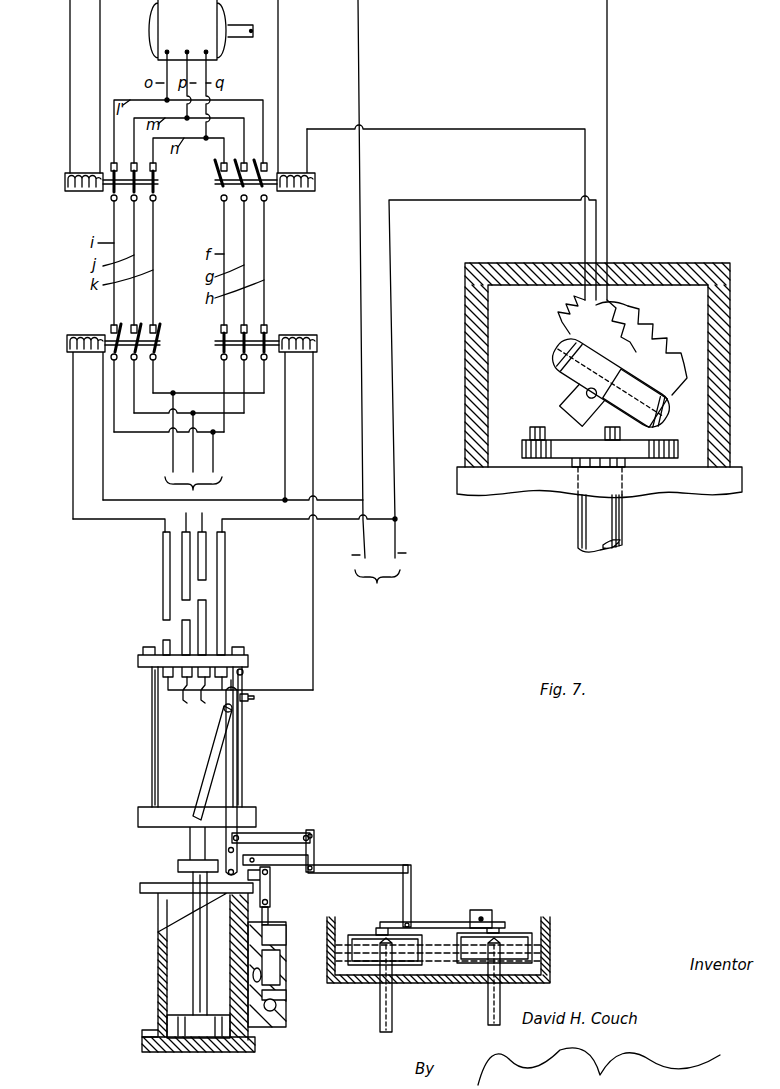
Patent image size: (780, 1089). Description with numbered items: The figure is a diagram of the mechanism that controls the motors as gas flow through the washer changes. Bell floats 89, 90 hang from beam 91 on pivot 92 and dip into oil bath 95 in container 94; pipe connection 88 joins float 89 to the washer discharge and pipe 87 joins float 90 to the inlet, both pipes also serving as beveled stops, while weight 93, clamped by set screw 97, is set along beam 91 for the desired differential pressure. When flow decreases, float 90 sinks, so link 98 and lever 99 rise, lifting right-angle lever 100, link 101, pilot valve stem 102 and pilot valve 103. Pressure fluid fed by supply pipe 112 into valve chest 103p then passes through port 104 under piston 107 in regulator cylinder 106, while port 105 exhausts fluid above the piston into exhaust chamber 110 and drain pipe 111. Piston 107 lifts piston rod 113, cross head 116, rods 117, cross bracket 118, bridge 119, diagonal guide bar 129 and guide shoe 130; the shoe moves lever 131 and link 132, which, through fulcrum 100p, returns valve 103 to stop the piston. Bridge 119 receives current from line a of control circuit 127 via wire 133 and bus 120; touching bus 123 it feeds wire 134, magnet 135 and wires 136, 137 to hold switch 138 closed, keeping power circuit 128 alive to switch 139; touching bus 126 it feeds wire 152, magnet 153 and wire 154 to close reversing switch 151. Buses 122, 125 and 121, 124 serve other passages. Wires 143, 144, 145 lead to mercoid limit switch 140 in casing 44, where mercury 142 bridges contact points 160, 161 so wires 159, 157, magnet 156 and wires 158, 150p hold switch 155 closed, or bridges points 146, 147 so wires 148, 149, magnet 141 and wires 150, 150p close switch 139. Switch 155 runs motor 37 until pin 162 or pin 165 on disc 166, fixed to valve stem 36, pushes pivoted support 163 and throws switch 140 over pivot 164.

The motor 37 is at (201, 30).
The wire 157 is at (70, 95).
The wire 158 is at (100, 70).
The wire 150 is at (278, 92).
The wire 150p is at (359, 92).
The switch 155 is at (160, 185).
The switch 139 is at (220, 195).
The magnet 156 is at (85, 193).
The control magnet 141 is at (305, 193).
The wire 149 is at (585, 240).
The wire 143 is at (497, 200).
The reversing switch 151 is at (162, 343).
The switch 138 is at (222, 360).
The magnet 153 is at (72, 335).
The magnet 135 is at (305, 335).
The wire 134 is at (313, 428).
The wire 136 is at (285, 420).
The power circuit 128 is at (193, 450).
The wire 154 is at (120, 496).
The wire 137 is at (320, 500).
The wire 152 is at (128, 521).
The wire 133 is at (268, 521).
The control circuit 127 is at (379, 566).
The bus 126 is at (163, 578).
The bus 125 is at (186, 558).
The bus 124 is at (202, 561).
The bus 120 is at (225, 590).
The bus 121 is at (203, 611).
The bus 122 is at (182, 628).
The bus 123 is at (163, 641).
The transverse electrical contactor or bridge 119 is at (216, 660).
The cross bracket 118 is at (140, 661).
The rods 117 is at (152, 773).
The cross head 116 is at (142, 826).
The lever 131 is at (237, 780).
The guide shoe 130 is at (224, 718).
The diagonal guide bar 129 is at (214, 762).
The link 132 is at (278, 833).
The lever 100 is at (316, 846).
The fulcrum 100p is at (314, 872).
The lever 99 is at (372, 863).
The link 98 is at (411, 876).
The link 101 is at (270, 890).
The pilot valve stem 102 is at (268, 913).
The piston rod 113 is at (193, 935).
The regulator cylinder 106 is at (158, 976).
The supply pipe 112 is at (258, 1022).
The piston 107 is at (170, 1022).
The pilot valve 103 is at (286, 950).
The port 105 is at (286, 934).
The exhaust chamber 110 is at (270, 968).
The exhaust or drain pipe 111 is at (253, 977).
The port 104 is at (286, 995).
The valve chest 103p is at (276, 1005).
The container 94 is at (550, 942).
The oil bath 95 is at (538, 958).
The bell float 89 is at (360, 935).
The bell float 90 is at (505, 933).
The beam 91 is at (425, 922).
The pivot 92 is at (448, 922).
The weight 93 is at (490, 915).
The set screw 97 is at (483, 915).
The pipe connection 88 is at (382, 1015).
The pipe 87 is at (492, 1010).
The casing 44 is at (465, 376).
The wire 148 is at (558, 318).
The wire 144 is at (620, 306).
The wire 159 is at (655, 326).
The wire 145 is at (630, 345).
The mercoid limit switch 140 is at (592, 372).
The contact point 147 is at (556, 353).
The contact point 146 is at (570, 372).
The contact point 160 is at (651, 384).
The pivoted support 163 is at (592, 417).
The contact point 161 is at (665, 403).
The mercury 142 is at (668, 418).
The pin 162 is at (536, 427).
The pivot 164 is at (615, 416).
The disc 166 is at (672, 458).
The pin 165 is at (605, 460).
The valve stem 36 is at (578, 528).